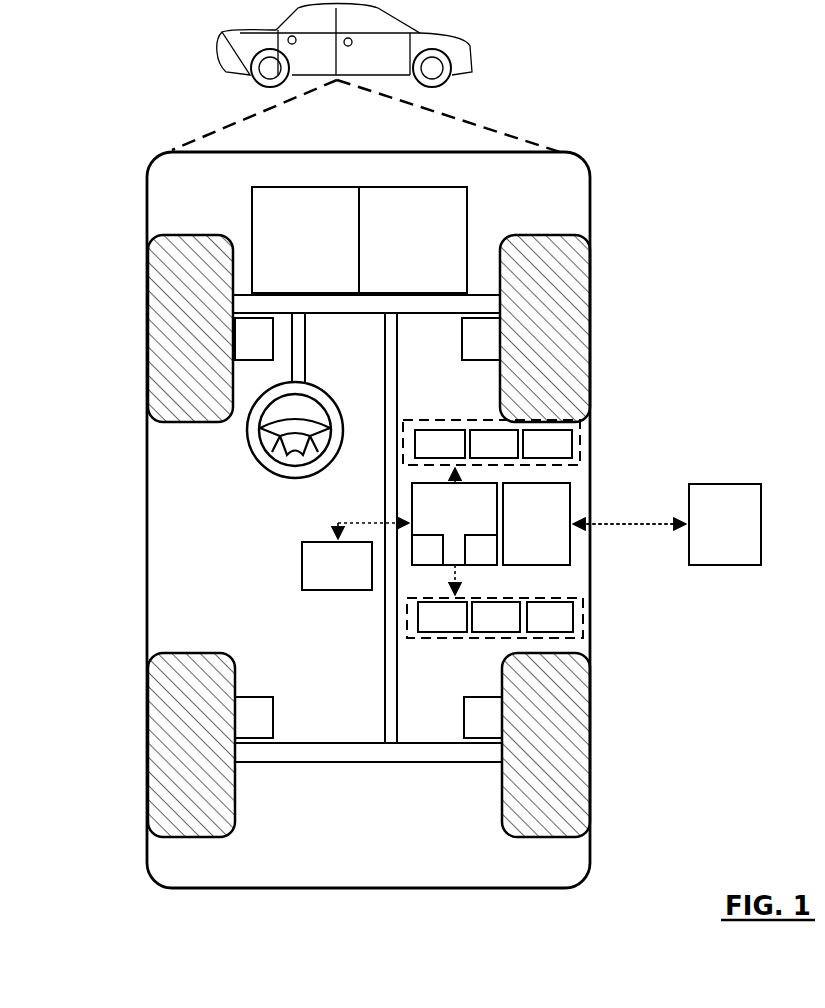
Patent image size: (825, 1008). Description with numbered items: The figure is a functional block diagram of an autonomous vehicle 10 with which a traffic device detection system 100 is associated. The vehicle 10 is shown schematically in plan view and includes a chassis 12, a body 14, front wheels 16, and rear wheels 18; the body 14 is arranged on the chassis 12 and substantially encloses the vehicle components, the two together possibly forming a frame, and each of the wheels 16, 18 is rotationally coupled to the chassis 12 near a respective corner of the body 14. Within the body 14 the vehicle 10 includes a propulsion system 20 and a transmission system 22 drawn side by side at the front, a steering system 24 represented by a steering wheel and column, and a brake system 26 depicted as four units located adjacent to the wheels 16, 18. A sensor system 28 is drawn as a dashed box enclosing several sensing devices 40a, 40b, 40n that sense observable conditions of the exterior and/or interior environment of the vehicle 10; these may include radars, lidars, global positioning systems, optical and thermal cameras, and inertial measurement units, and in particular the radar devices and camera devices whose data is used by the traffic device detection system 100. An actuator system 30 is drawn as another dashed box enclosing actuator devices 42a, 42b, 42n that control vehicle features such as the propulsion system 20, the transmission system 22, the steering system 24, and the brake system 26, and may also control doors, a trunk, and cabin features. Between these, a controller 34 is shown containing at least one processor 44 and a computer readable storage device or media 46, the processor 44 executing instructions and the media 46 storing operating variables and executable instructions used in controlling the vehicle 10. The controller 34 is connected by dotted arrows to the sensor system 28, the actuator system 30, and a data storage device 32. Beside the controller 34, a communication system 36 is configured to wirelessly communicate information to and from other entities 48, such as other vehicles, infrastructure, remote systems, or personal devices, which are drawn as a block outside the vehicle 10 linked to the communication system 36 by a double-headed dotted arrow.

The vehicle 10 is at (222, 57).
The traffic device detection system 100 is at (614, 161).
The chassis 12 is at (385, 680).
The body 14 is at (147, 492).
The front wheels 16 is at (186, 235).
The rear wheels 18 is at (208, 838).
The propulsion system 20 is at (294, 252).
The transmission system 22 is at (400, 252).
The steering system 24 is at (330, 337).
The brake system 26 is at (244, 349).
The sensor system 28 is at (425, 420).
The actuator system 30 is at (440, 640).
The data storage device 32 is at (326, 576).
The controller 34 is at (444, 533).
The communication system 36 is at (525, 533).
The sensing device 40a is at (425, 454).
The sensing device 40b is at (479, 454).
The sensing device 40n is at (532, 454).
The actuator device 42a is at (428, 627).
The actuator device 42b is at (481, 627).
The actuator device 42n is at (535, 627).
The processor 44 is at (418, 559).
The computer readable storage device or media 46 is at (472, 559).
The other entities 48 is at (714, 533).